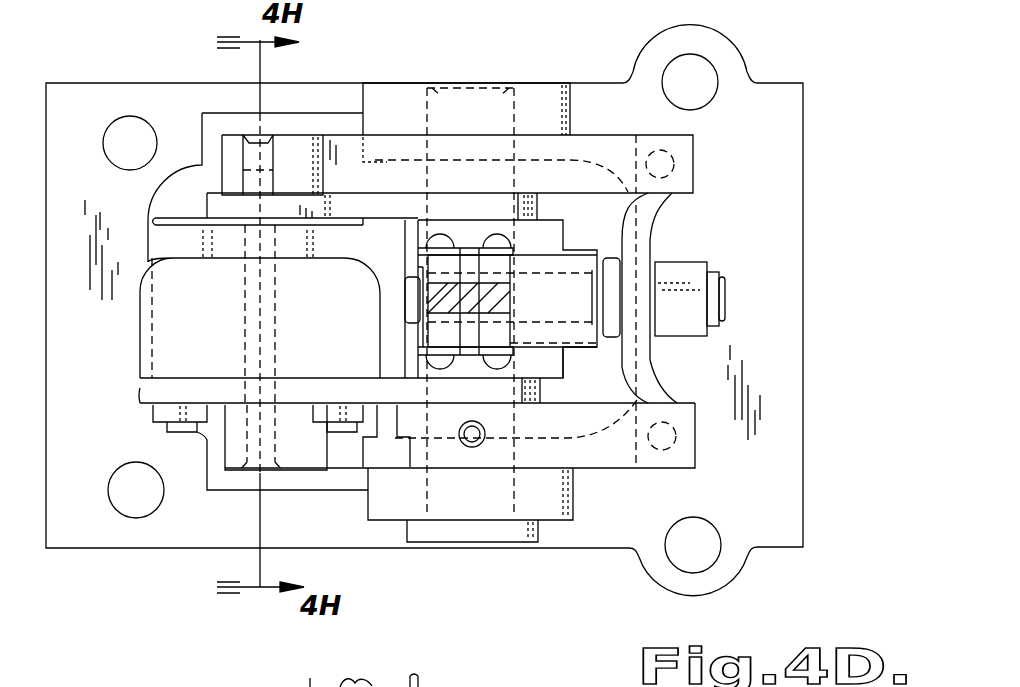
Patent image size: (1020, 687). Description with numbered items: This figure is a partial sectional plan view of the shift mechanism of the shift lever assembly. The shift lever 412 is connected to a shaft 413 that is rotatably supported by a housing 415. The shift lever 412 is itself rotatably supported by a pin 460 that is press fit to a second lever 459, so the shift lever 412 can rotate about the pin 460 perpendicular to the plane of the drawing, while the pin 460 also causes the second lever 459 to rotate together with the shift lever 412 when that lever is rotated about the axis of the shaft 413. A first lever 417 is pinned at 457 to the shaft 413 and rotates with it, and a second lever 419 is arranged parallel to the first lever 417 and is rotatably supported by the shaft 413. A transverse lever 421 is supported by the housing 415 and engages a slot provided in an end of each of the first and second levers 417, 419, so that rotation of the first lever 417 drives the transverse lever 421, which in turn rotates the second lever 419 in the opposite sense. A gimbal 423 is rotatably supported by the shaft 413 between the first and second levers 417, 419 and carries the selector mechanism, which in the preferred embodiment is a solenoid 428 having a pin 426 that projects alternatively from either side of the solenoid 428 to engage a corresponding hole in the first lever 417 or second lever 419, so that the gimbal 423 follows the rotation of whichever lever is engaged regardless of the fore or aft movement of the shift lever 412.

The shift lever 412 is at (437, 334).
The shaft 413 is at (469, 107).
The housing 415 is at (388, 86).
The first lever 417 is at (623, 460).
The second lever 419 is at (601, 142).
The transverse lever 421 is at (660, 218).
The gimbal 423 is at (161, 400).
The pin 426 is at (264, 180).
The solenoid 428 is at (165, 351).
The pin connection 457 is at (472, 447).
The second lever 459 is at (578, 254).
The pin 460 is at (412, 295).